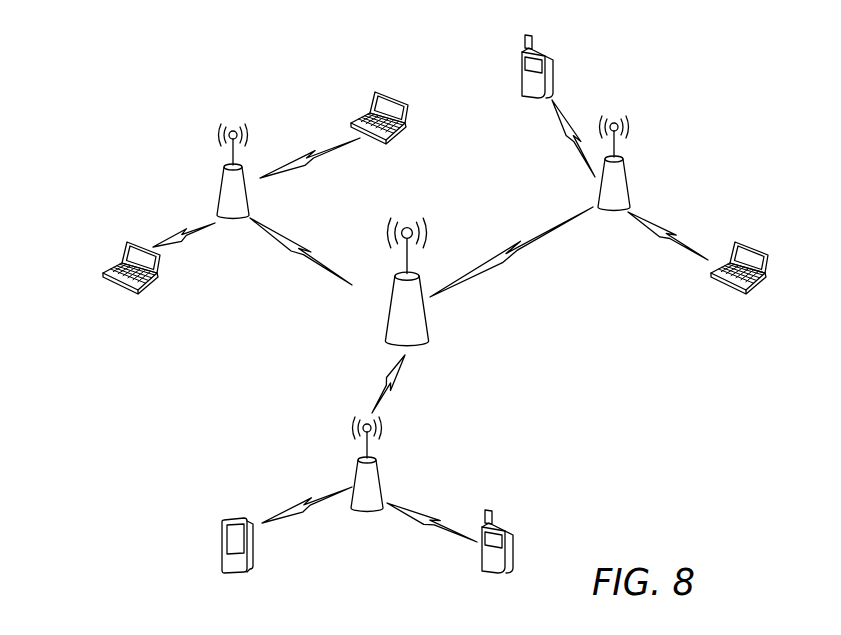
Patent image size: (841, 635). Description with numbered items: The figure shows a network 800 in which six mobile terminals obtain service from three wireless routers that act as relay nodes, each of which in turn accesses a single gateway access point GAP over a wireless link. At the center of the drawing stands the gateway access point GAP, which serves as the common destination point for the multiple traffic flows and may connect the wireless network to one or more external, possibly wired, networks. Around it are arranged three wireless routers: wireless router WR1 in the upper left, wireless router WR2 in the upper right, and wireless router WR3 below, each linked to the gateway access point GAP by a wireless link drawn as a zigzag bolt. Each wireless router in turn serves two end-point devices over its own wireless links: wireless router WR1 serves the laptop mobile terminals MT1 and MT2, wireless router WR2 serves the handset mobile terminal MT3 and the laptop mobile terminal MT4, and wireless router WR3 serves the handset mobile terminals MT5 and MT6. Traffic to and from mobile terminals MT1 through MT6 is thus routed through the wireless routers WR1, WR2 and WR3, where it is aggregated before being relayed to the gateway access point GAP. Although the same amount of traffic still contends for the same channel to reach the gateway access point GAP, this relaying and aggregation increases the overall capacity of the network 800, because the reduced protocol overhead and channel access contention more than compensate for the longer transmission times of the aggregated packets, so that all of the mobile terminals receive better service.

The network 800 is at (627, 395).
The wireless router WR1 is at (215, 171).
The wireless router WR2 is at (630, 163).
The wireless router WR3 is at (367, 481).
The gateway access point GAP is at (386, 282).
The mobile terminal MT1 is at (111, 268).
The mobile terminal MT2 is at (366, 111).
The mobile terminal MT3 is at (556, 66).
The mobile terminal MT4 is at (758, 268).
The mobile terminal MT5 is at (517, 541).
The mobile terminal MT6 is at (215, 545).